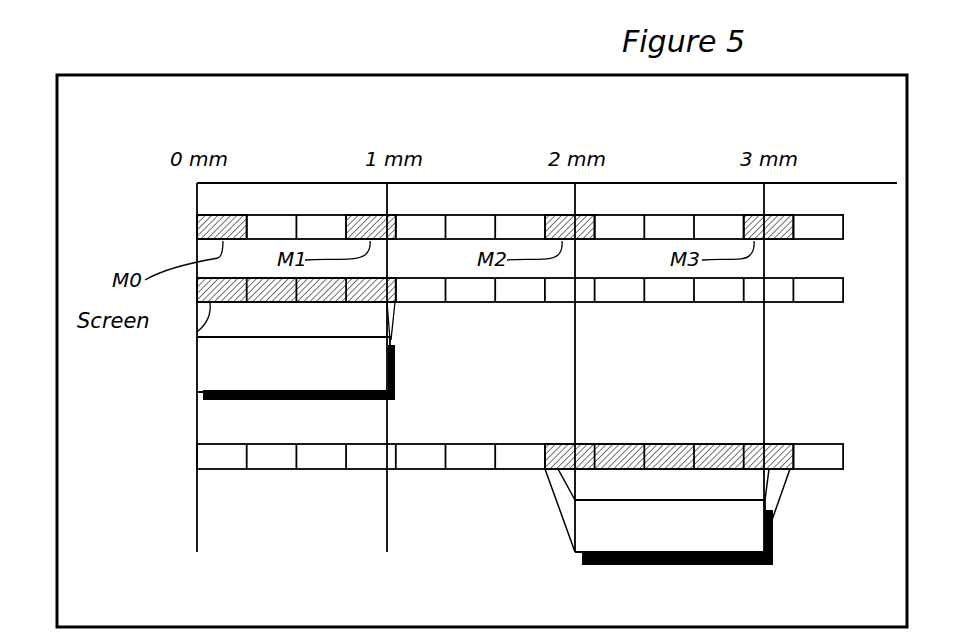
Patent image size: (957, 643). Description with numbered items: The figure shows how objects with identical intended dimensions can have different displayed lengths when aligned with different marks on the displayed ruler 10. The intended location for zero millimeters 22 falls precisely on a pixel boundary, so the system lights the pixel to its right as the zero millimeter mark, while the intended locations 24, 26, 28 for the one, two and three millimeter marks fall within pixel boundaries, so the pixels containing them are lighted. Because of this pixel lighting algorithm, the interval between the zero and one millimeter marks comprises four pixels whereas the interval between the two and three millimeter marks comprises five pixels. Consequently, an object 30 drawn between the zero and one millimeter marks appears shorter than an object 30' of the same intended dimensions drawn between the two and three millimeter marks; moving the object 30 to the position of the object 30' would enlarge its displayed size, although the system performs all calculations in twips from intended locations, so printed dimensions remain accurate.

The intended location for 0 millimeters 22 is at (197, 200).
The displayed ruler 10 is at (197, 228).
The intended location for 1 millimeter 24 is at (387, 183).
The intended location for 2 millimeters 26 is at (575, 196).
The intended location for 3 millimeters 28 is at (764, 197).
The object 30 is at (480, 340).
The object 30' is at (520, 465).